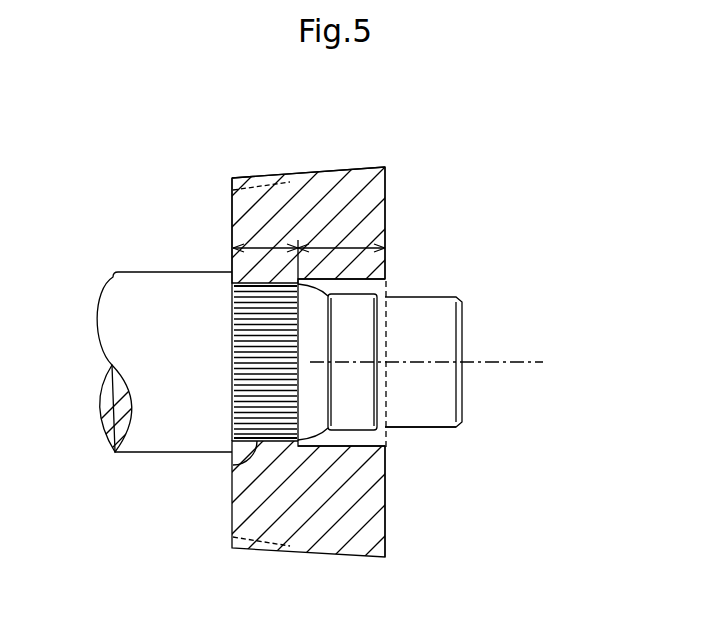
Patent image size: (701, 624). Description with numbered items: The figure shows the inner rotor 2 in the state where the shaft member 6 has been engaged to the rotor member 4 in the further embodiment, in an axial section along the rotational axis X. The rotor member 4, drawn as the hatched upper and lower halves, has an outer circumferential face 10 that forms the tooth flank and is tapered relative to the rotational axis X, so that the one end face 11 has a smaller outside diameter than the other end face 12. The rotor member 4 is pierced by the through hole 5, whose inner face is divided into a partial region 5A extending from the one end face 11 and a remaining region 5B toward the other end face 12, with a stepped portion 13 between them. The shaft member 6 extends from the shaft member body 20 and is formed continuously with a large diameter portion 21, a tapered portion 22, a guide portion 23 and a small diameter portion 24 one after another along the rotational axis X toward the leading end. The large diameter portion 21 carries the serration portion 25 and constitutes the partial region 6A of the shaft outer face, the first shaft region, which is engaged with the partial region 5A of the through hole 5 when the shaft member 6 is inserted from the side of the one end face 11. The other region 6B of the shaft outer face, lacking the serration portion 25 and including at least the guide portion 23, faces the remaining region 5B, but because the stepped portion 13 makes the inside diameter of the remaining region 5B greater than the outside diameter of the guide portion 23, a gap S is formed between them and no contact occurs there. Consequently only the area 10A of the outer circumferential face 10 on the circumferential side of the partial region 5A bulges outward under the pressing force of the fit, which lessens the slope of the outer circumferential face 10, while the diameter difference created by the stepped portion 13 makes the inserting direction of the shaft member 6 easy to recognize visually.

The inner rotor 2 is at (393, 512).
The rotor member 4 is at (368, 175).
The through hole 5 is at (348, 280).
The partial region 5A is at (214, 224).
The remaining region 5B is at (390, 226).
The shaft member 6 is at (463, 296).
The partial region 6A is at (266, 246).
The other region 6B is at (368, 243).
The outer circumferential face 10 is at (338, 168).
The area 10A is at (260, 176).
The one end face 11 is at (232, 258).
The other end face 12 is at (388, 182).
The stepped portion 13 is at (308, 286).
The shaft member body 20 is at (158, 455).
The large diameter portion 21 is at (238, 471).
The tapered portion 22 is at (310, 430).
The guide portion 23 is at (352, 420).
The small diameter portion 24 is at (423, 413).
The serration portion 25 is at (260, 368).
The gap S is at (412, 342).
The rotational axis X is at (436, 364).